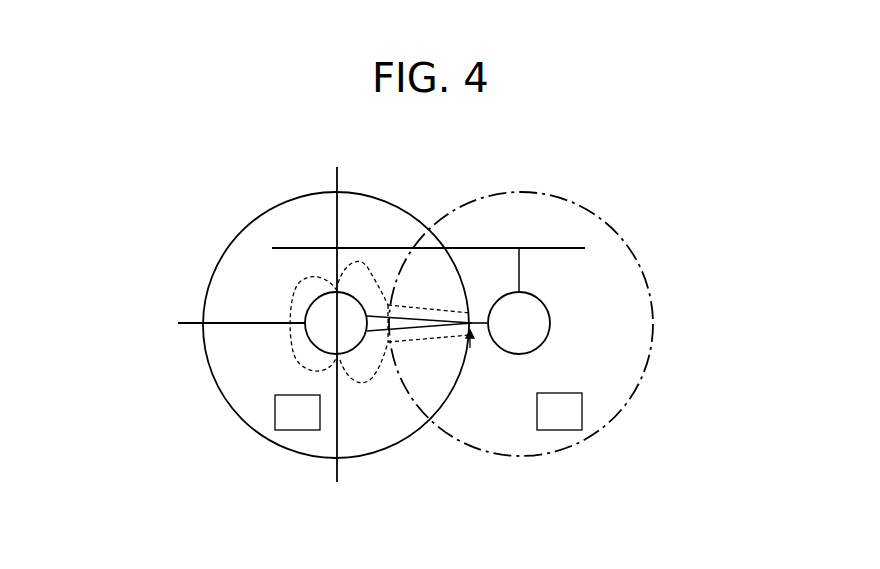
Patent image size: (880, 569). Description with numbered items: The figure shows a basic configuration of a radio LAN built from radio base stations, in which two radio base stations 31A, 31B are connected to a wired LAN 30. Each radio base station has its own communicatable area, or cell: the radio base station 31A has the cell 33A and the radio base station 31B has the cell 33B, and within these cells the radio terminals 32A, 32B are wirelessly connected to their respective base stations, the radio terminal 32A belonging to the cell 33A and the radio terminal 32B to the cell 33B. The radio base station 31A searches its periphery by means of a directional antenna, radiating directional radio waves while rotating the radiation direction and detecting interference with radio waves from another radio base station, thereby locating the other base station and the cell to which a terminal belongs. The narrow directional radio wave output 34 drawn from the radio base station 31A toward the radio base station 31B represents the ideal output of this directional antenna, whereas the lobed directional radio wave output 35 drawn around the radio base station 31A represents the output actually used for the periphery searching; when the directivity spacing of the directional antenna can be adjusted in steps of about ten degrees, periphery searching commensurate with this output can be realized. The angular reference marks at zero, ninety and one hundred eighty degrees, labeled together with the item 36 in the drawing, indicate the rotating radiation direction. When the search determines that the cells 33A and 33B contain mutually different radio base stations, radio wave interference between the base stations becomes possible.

The wired LAN 30 is at (575, 247).
The radio base station 31A is at (298, 331).
The radio base station 31B is at (550, 323).
The radio terminal 32A is at (293, 430).
The radio terminal 32B is at (563, 430).
The communicatable area (cell) 33A is at (207, 288).
The communicatable area (cell) 33B is at (653, 318).
The directional radio wave output 34 is at (398, 308).
The directional radio wave output 35 is at (290, 302).
The reference direction axis 36 is at (216, 327).